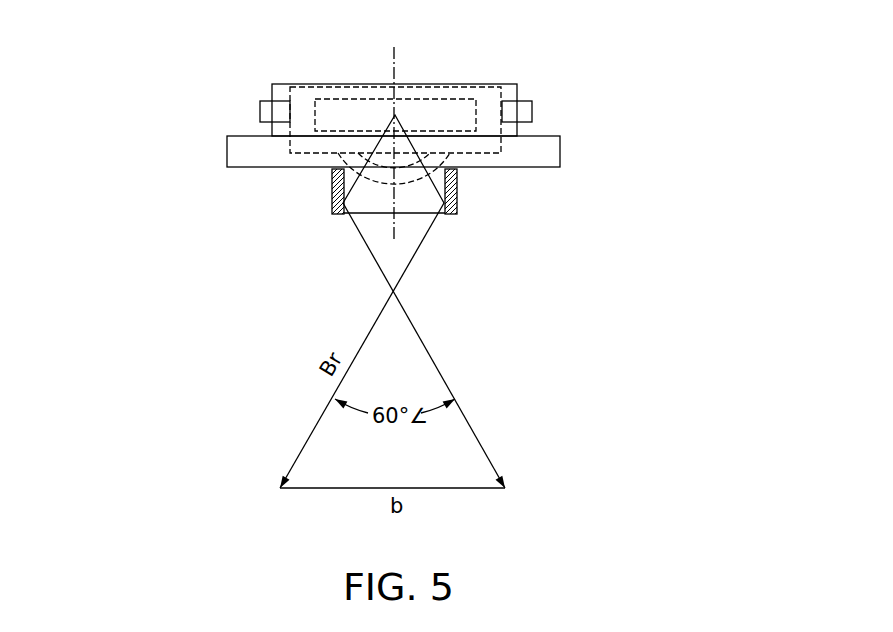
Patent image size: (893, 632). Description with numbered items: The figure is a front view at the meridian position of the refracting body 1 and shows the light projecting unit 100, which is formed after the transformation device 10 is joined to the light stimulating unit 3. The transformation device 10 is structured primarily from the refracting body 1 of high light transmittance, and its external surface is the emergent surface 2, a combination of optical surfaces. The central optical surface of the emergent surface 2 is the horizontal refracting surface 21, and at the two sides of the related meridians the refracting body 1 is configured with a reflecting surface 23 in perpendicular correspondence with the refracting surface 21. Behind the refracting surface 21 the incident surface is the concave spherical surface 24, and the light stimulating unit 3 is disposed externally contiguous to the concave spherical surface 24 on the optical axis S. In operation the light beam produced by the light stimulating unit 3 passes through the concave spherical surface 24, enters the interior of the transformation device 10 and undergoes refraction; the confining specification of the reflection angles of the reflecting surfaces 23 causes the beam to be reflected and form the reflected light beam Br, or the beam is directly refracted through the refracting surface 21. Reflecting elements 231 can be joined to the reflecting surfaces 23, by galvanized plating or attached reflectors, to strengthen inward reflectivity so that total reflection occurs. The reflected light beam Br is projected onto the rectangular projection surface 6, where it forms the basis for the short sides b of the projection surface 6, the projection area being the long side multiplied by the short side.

The light projecting unit 100 is at (553, 105).
The transformation device 10 is at (595, 142).
The refracting body 1 is at (223, 95).
The light stimulating unit 3 is at (435, 115).
The emergent surface 2 is at (347, 232).
The concave spherical surface 24 is at (383, 180).
The refracting surface 21 is at (376, 217).
The reflecting surface 23 is at (371, 216).
The reflecting element 231 is at (332, 178).
The projection surface 6 is at (462, 488).